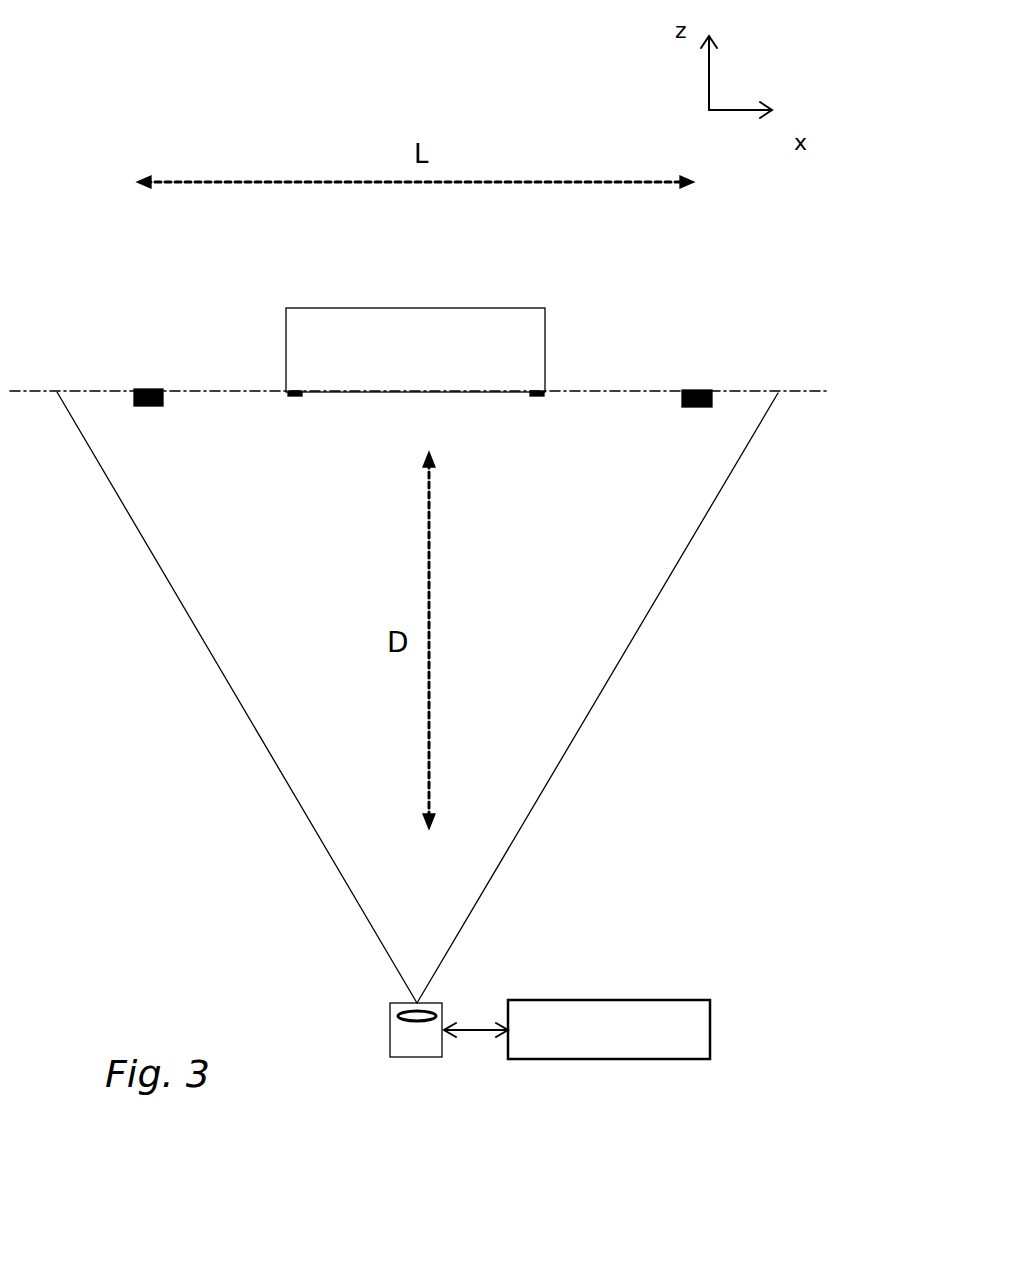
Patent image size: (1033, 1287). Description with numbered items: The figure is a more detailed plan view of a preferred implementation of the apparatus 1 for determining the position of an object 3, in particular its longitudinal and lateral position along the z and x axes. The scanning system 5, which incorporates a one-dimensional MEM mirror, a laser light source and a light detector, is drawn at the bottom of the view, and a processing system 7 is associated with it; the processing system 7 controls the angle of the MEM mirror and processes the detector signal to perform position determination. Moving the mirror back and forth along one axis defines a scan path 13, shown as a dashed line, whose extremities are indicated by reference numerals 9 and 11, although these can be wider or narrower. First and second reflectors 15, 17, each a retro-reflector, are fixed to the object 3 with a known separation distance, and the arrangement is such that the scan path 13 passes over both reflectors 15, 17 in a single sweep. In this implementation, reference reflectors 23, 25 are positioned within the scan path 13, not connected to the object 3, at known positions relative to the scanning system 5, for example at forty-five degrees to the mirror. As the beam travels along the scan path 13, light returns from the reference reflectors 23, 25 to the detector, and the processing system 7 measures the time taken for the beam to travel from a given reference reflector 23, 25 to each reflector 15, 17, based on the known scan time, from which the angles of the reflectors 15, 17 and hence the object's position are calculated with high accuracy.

The apparatus 1 is at (114, 66).
The object 3 is at (392, 345).
The scanning system 5 is at (416, 1058).
The processing system 7 is at (603, 1060).
The extremity of the scan path 9 is at (210, 658).
The extremity of the scan path 11 is at (685, 550).
The scan path 13 is at (440, 394).
The first reflector 15 is at (296, 397).
The second reflector 17 is at (538, 397).
The reference reflector 23 is at (134, 391).
The reference reflector 25 is at (688, 392).